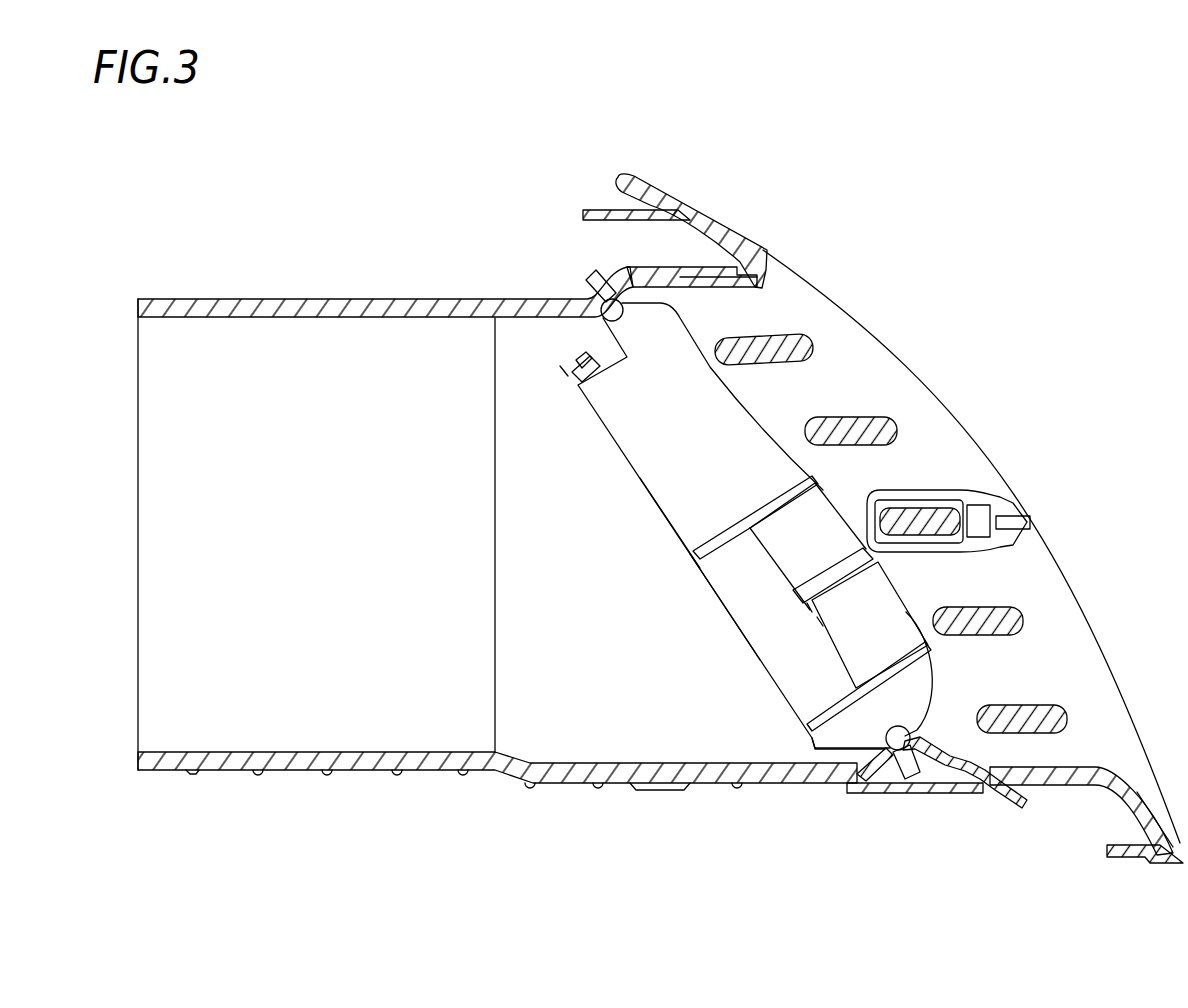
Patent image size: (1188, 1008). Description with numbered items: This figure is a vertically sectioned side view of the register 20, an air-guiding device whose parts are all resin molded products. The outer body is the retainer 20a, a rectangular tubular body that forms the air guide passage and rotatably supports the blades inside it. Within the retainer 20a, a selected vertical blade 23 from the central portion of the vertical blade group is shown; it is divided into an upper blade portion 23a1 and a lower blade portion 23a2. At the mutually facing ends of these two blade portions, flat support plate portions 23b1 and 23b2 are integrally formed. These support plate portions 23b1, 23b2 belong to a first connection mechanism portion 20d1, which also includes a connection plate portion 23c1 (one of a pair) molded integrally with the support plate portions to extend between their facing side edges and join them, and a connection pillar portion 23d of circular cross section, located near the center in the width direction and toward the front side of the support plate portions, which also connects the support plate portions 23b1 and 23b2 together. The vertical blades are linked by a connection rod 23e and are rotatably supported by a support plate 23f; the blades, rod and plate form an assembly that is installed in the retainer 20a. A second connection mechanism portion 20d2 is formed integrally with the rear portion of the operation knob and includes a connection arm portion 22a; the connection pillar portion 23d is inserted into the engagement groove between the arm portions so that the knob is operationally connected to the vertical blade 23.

The register 20 is at (180, 290).
The retainer 20a is at (313, 296).
The first connection mechanism portion 20d1 is at (697, 582).
The second connection mechanism portion 20d2 is at (817, 640).
The connection arm portion 22a is at (815, 614).
The vertical blade 23 is at (770, 424).
The upper blade portion 23a1 is at (622, 431).
The lower blade portion 23a2 is at (833, 740).
The support plate portion 23b1 is at (822, 489).
The support plate portion 23b2 is at (933, 673).
The connection plate portion 23c1 is at (734, 592).
The connection pillar portion 23d is at (903, 613).
The connection rod 23e is at (572, 370).
The support plate 23f is at (943, 770).